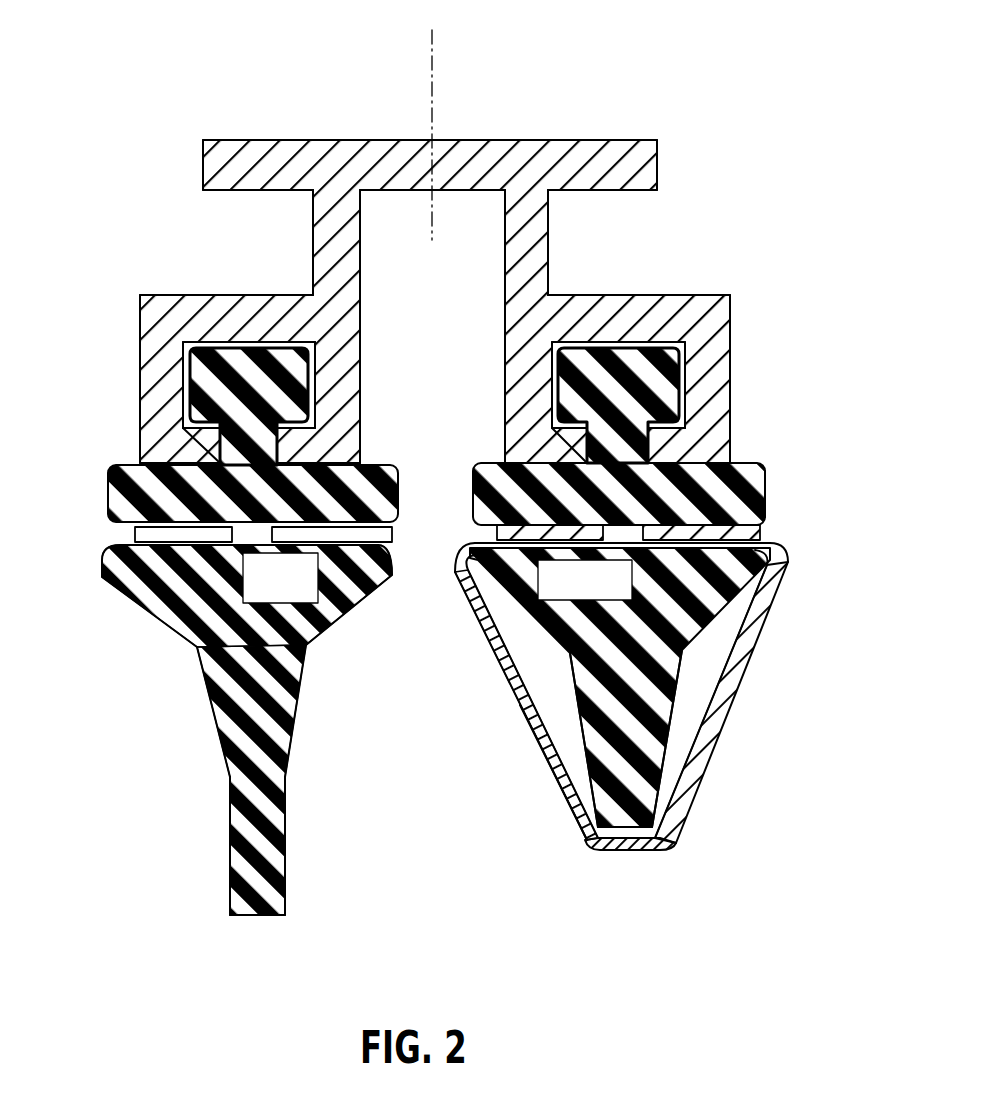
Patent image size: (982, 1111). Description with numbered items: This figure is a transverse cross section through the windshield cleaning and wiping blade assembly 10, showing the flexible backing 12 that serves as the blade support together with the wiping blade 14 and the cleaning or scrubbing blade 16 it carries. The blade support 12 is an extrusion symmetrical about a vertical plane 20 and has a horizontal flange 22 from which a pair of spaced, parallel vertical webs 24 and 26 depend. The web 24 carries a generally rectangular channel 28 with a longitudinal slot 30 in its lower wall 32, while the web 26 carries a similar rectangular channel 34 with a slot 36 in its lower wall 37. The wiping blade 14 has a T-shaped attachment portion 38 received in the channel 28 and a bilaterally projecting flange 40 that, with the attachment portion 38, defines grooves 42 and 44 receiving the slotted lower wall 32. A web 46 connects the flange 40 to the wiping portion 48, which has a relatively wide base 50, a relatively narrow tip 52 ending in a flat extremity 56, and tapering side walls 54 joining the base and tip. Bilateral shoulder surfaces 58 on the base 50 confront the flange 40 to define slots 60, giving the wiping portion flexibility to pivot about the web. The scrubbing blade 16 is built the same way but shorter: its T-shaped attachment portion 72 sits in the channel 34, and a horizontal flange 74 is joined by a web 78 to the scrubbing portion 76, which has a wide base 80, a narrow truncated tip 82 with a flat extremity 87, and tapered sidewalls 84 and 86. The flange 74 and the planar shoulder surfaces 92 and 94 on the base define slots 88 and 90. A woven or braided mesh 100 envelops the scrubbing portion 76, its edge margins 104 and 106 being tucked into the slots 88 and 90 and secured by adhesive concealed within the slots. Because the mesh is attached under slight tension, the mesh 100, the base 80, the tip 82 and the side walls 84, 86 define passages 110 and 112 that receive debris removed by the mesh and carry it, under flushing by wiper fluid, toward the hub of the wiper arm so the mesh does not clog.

The windshield cleaning and wiping blade assembly 10 is at (570, 79).
The flexible backing 12 is at (294, 134).
The wiping blade 14 is at (128, 616).
The cleaning or scrubbing blade 16 is at (812, 560).
The vertical plane 20 is at (432, 55).
The horizontal flange 22 is at (660, 143).
The vertical web 24 is at (313, 218).
The vertical web 26 is at (548, 215).
The rectangular channel 28 is at (160, 295).
The longitudinal slot 30 is at (285, 345).
The lower wall 32 is at (333, 413).
The rectangular channel 34 is at (585, 295).
The slot 36 is at (563, 418).
The lower wall 37 is at (690, 432).
The T-shaped attachment portion 38 is at (230, 342).
The bilaterally projecting flange 40 is at (398, 478).
The groove 42 is at (147, 433).
The groove 44 is at (345, 440).
The web 46 is at (223, 448).
The wiping portion 48 is at (190, 751).
The base 50 is at (350, 628).
The tip 52 is at (287, 870).
The tapering side walls 54 is at (210, 720).
The flat extremity 56 is at (258, 915).
The shoulder surfaces 58 is at (127, 540).
The slots 60 is at (145, 530).
The T-shaped attachment portion 72 is at (640, 345).
The horizontal flange 74 is at (770, 470).
The scrubbing portion 76 is at (770, 680).
The web 78 is at (627, 535).
The base 80 is at (506, 660).
The tip 82 is at (662, 790).
The tapered sidewall 84 is at (575, 720).
The tapered sidewall 86 is at (672, 715).
The flat extremity 87 is at (625, 850).
The slot 88 is at (580, 537).
The slot 90 is at (730, 465).
The shoulder surface 92 is at (462, 552).
The shoulder surface 94 is at (766, 490).
The mesh 100 is at (565, 790).
The edge margin 104 is at (467, 530).
The edge margin 106 is at (786, 541).
The passage or channel 110 is at (538, 680).
The passage or channel 112 is at (690, 692).